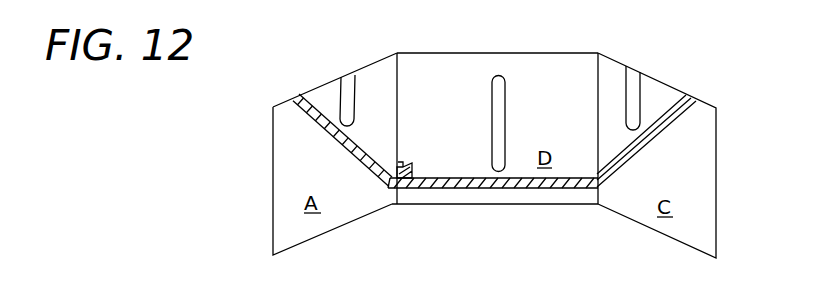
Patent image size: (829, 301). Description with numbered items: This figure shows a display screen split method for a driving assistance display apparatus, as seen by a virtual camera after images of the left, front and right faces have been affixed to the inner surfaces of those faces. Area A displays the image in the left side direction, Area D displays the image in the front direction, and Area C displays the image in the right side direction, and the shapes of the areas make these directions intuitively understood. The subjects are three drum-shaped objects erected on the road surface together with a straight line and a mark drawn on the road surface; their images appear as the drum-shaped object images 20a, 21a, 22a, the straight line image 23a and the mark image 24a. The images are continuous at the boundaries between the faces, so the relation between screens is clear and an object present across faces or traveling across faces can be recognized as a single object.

The drum-shaped object image 20a is at (347, 76).
The drum-shaped object image 21a is at (500, 75).
The drum-shaped object image 22a is at (634, 72).
The straight line image 23a is at (528, 190).
The mark image 24a is at (402, 167).